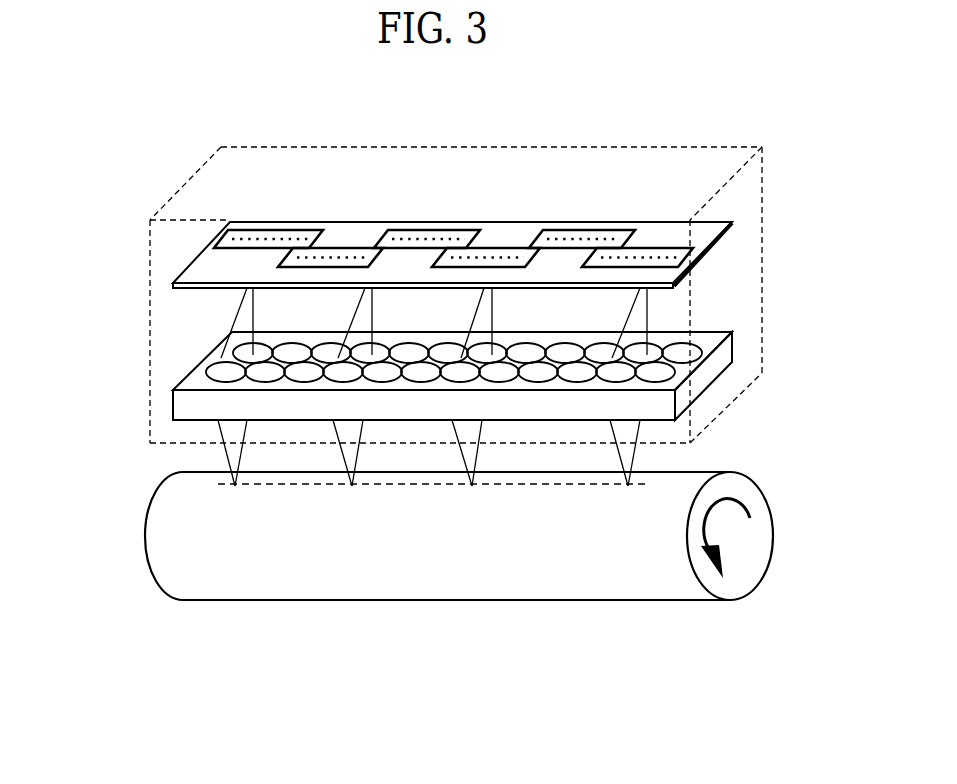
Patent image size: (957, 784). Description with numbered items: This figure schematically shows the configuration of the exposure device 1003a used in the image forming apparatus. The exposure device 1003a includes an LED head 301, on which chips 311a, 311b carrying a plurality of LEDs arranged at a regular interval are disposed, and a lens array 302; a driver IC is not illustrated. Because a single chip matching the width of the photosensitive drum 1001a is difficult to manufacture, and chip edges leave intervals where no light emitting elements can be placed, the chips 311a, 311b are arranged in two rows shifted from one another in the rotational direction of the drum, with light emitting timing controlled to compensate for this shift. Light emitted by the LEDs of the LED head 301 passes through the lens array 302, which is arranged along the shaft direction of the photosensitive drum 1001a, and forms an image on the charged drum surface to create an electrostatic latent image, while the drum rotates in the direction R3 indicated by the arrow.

The LED head 301 is at (728, 238).
The lens array 302 is at (725, 355).
The chip 311a is at (275, 228).
The chip 311b is at (345, 246).
The exposure device 1003a is at (160, 248).
The photosensitive drum 1001a is at (145, 540).
The rotation direction of photosensitive drum R3 is at (749, 508).